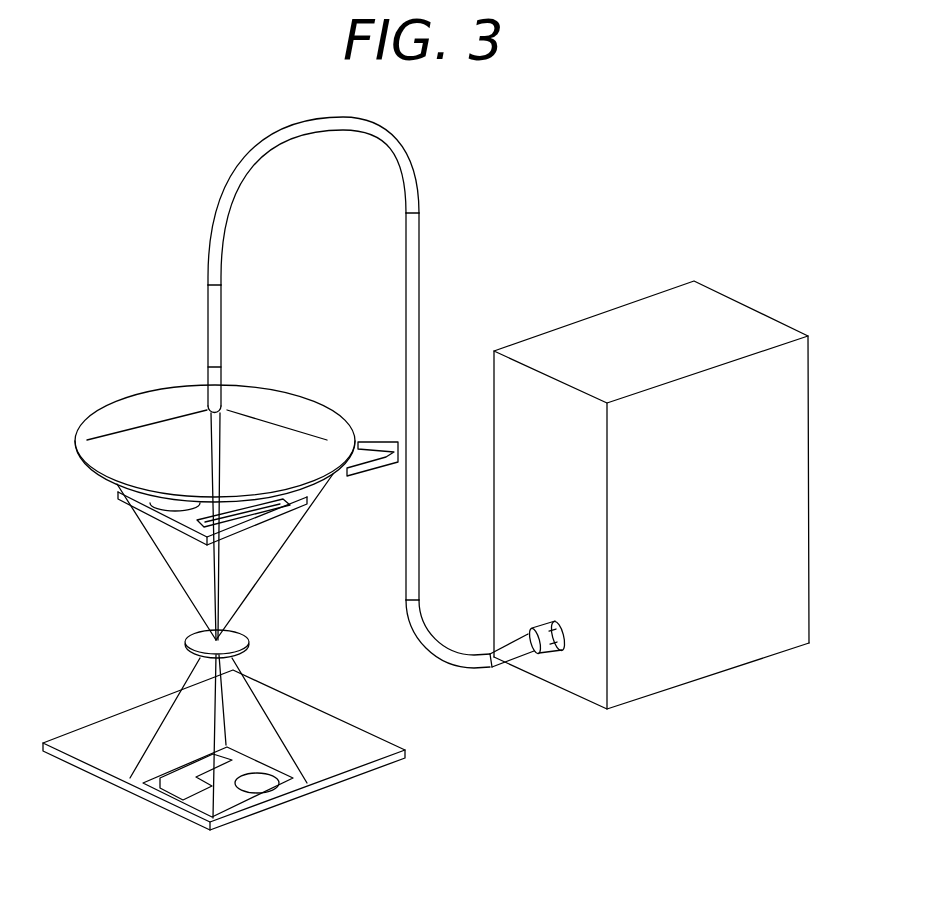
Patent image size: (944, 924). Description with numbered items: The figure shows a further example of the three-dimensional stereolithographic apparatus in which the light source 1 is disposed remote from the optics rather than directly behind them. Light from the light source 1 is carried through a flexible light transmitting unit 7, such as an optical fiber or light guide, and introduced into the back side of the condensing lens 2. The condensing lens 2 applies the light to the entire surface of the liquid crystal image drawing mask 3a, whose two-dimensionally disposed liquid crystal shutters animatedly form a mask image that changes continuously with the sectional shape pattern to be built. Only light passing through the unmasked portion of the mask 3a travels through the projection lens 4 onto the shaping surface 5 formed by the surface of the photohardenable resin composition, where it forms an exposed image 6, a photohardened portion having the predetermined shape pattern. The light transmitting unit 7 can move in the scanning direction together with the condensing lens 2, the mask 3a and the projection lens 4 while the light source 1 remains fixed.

The light source 1 is at (712, 312).
The condensing lens 2 is at (277, 405).
The liquid crystal image drawing mask 3a is at (162, 520).
The projection lens 4 is at (233, 638).
The shaping surface 5 is at (350, 737).
The exposed image 6 is at (243, 802).
The light transmitting unit 7 is at (415, 290).